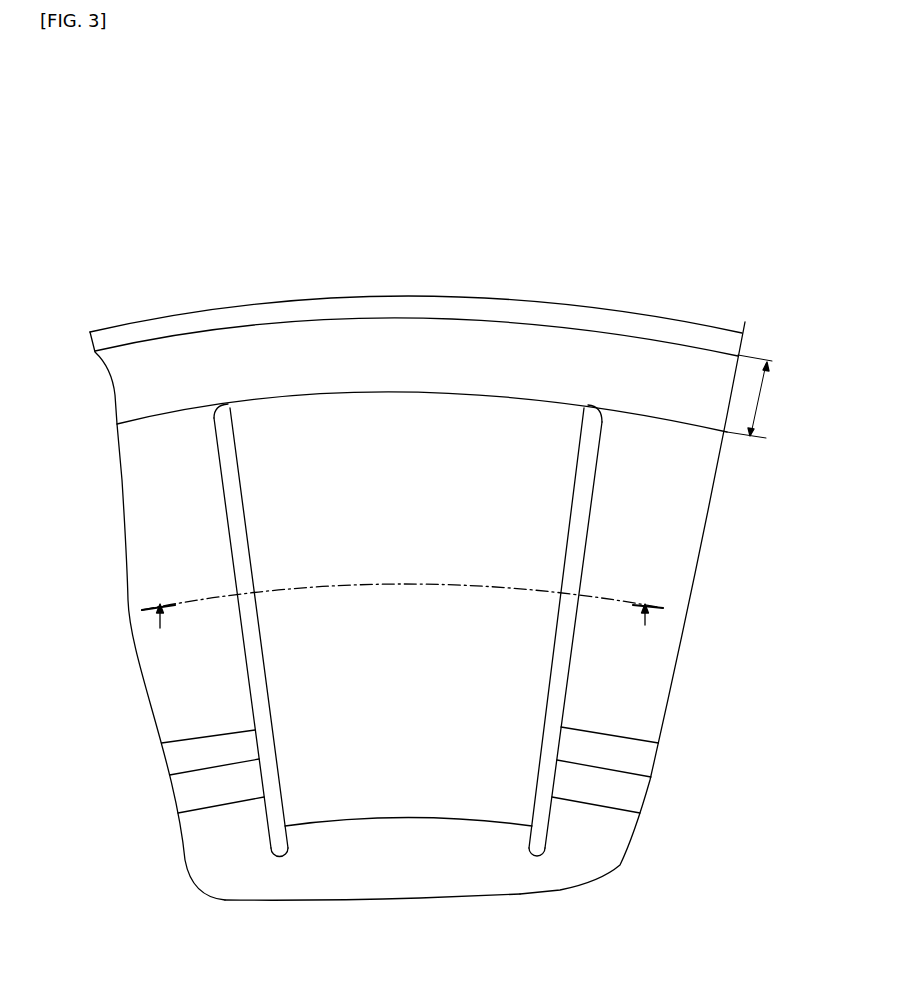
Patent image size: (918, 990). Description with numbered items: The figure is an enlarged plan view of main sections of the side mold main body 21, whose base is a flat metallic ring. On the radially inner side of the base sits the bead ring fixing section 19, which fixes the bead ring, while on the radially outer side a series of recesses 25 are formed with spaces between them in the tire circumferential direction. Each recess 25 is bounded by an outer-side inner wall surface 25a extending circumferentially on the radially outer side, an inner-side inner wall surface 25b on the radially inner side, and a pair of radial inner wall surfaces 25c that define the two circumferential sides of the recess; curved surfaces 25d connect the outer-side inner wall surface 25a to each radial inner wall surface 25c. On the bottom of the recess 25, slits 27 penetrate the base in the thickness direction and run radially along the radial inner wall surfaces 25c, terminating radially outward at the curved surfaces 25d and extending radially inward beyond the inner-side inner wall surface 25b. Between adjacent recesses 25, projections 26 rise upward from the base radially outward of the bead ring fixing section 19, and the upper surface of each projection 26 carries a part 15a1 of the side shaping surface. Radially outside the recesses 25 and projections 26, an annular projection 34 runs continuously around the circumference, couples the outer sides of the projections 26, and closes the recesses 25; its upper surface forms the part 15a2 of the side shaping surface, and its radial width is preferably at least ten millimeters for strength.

The side mold main body 21 is at (405, 84).
The annular projection 34 is at (545, 324).
The part of the side shaping surface 15a2 is at (296, 368).
The part of the side shaping surface 15a1 is at (176, 556).
The projection 26 is at (178, 508).
The recess 25 is at (403, 628).
The outer-side inner wall surface 25a is at (422, 394).
The inner-side inner wall surface 25b is at (349, 820).
The radial inner wall surface 25c is at (248, 662).
The curved surface 25d is at (226, 412).
The slit 27 is at (273, 857).
The bead ring fixing section 19 is at (435, 860).